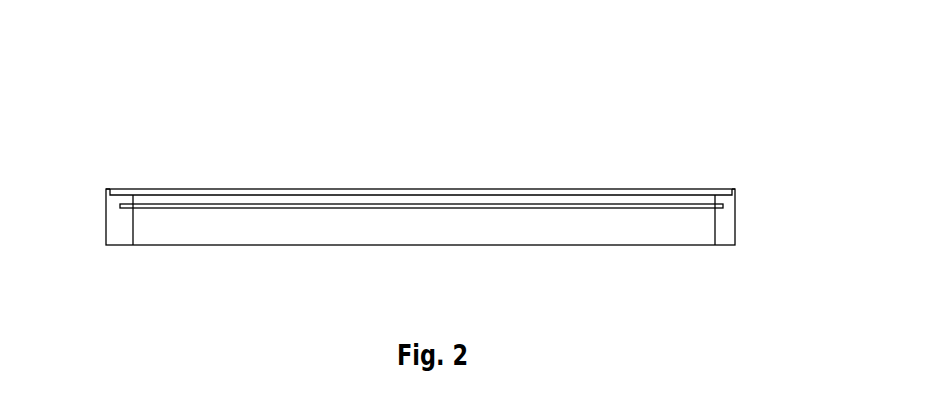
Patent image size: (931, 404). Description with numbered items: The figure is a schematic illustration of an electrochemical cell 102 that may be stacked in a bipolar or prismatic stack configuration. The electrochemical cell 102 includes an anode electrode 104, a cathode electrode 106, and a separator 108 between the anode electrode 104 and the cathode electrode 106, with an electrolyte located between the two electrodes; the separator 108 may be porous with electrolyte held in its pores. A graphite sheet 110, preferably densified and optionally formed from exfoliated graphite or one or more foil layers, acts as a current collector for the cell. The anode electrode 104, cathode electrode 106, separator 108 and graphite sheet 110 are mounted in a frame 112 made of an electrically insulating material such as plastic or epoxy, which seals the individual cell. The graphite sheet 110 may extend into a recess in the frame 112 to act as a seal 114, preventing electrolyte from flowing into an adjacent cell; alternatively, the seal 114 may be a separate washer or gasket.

The electrochemical cell 102 is at (144, 65).
The anode electrode 104 is at (278, 231).
The cathode electrode 106 is at (275, 200).
The separator 108 is at (398, 203).
The graphite sheet 110 is at (619, 189).
The frame 112 is at (122, 245).
The seal 114 is at (117, 188).